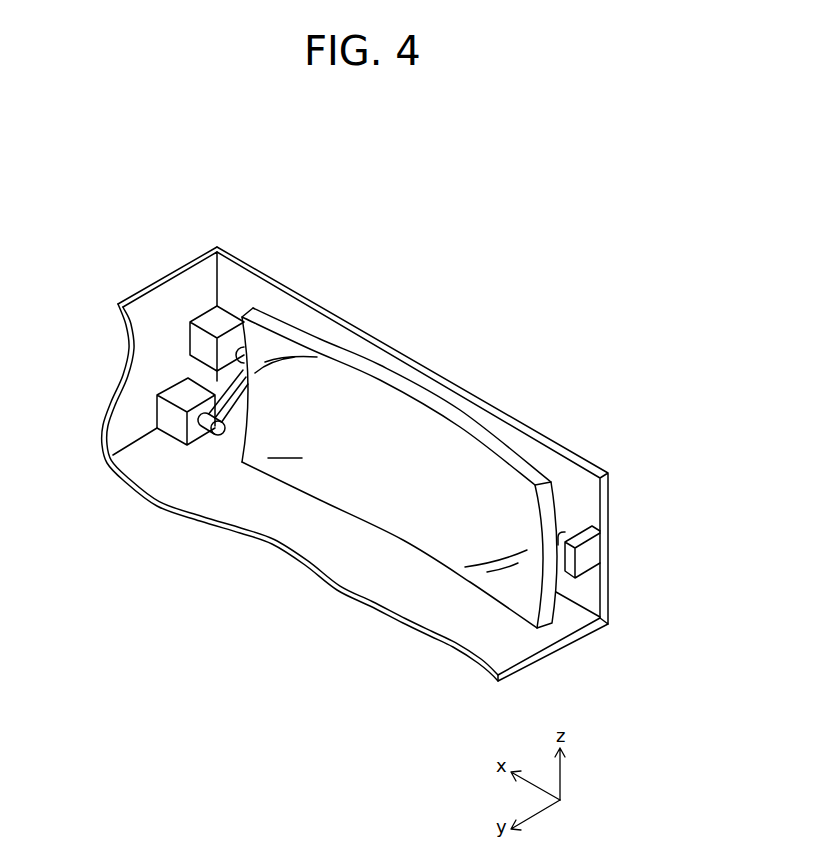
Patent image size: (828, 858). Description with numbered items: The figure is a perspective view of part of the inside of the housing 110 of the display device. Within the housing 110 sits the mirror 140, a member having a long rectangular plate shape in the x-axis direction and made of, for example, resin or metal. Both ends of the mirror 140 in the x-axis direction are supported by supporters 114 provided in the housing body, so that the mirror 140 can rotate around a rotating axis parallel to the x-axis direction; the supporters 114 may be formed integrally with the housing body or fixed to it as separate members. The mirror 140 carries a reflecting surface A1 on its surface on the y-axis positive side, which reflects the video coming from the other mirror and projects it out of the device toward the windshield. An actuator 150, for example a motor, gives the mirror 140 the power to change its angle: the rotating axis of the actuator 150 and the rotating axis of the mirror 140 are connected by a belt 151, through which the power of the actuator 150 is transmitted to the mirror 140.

The housing 110 is at (412, 361).
The supporters 114 is at (230, 307).
The mirror 140 is at (355, 360).
The actuator 150 is at (164, 437).
The belt 151 is at (205, 407).
The reflecting surface A1 is at (285, 448).